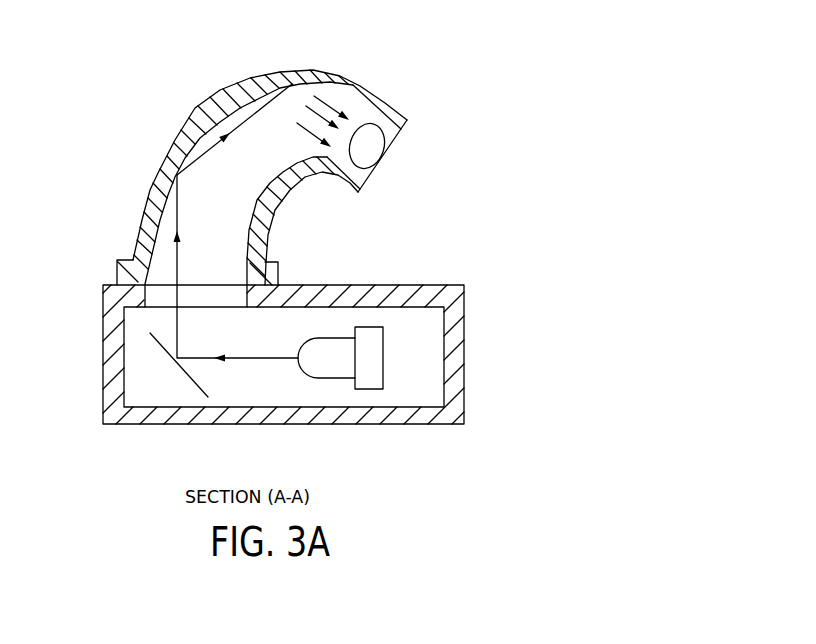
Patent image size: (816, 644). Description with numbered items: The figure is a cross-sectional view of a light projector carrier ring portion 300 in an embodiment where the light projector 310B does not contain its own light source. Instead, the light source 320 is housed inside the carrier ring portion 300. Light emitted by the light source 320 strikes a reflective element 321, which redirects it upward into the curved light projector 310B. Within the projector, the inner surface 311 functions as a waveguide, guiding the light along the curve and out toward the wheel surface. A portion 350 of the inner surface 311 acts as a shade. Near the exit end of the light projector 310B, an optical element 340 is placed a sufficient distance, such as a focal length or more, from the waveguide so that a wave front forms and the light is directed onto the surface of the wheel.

The light projector carrier ring portion 300 is at (453, 342).
The light projector 310B is at (288, 75).
The inner surface 311 is at (193, 163).
The light source 320 is at (330, 367).
The reflective element 321 is at (190, 380).
The optical element 340 is at (368, 150).
The portion of inner surface 350 is at (408, 119).